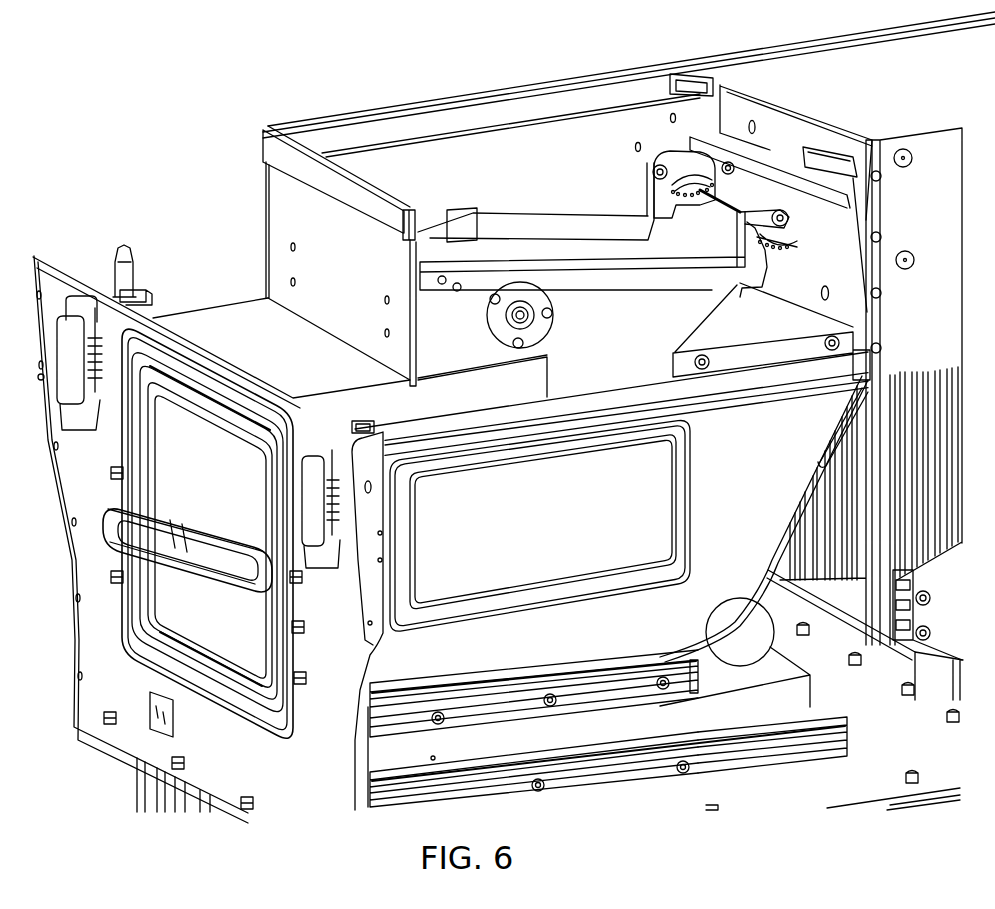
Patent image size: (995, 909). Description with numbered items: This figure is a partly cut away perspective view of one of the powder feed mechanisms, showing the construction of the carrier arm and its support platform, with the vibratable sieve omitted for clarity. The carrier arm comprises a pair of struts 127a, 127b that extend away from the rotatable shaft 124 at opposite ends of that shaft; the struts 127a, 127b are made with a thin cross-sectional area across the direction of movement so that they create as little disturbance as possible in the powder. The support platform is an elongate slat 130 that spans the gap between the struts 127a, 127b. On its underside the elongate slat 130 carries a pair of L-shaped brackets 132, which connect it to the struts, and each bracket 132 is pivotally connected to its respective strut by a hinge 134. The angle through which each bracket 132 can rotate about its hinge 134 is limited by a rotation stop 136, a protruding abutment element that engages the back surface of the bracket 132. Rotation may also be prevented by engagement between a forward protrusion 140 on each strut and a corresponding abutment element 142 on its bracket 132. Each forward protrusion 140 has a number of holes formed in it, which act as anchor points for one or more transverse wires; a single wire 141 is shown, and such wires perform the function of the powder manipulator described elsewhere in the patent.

The rotatable shaft 124 is at (423, 227).
The strut 127a is at (541, 228).
The strut 127b is at (586, 272).
The elongate slat 130 is at (773, 172).
The L-shaped bracket 132 is at (786, 226).
The hinge 134 is at (786, 225).
The rotation stop 136 is at (748, 245).
The forward protrusion 140 is at (713, 203).
The transverse wire 141 is at (737, 213).
The abutment element 142 is at (690, 152).